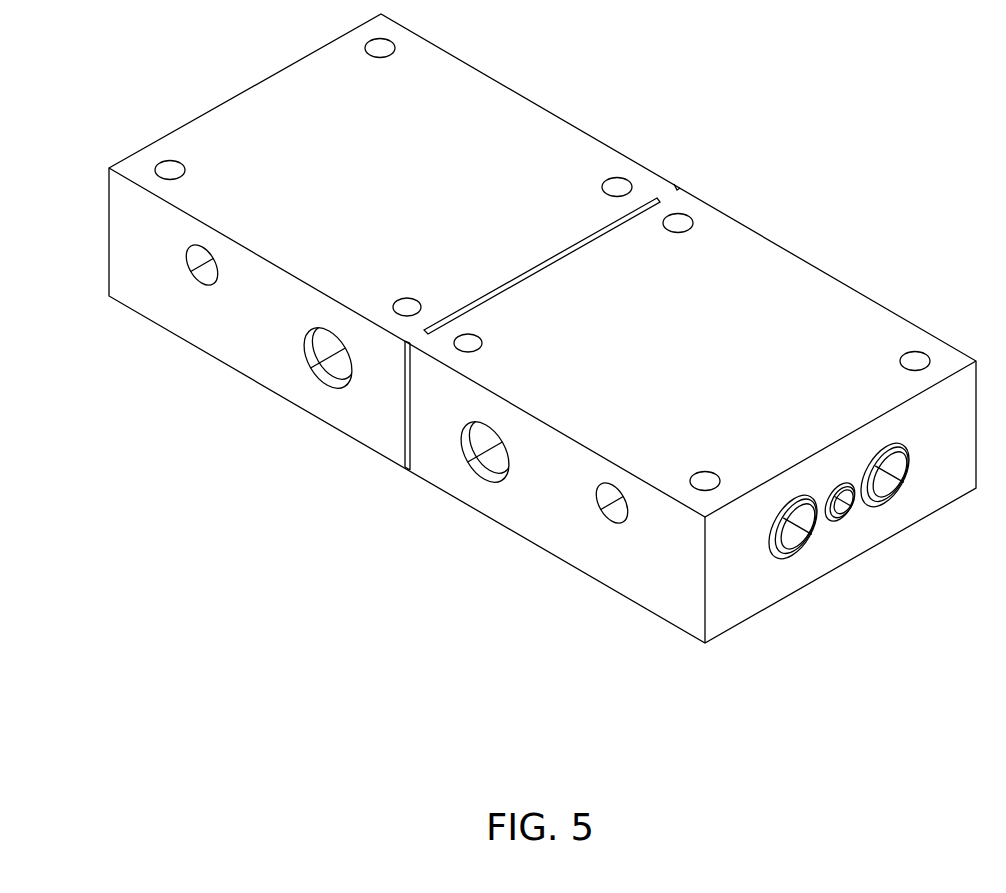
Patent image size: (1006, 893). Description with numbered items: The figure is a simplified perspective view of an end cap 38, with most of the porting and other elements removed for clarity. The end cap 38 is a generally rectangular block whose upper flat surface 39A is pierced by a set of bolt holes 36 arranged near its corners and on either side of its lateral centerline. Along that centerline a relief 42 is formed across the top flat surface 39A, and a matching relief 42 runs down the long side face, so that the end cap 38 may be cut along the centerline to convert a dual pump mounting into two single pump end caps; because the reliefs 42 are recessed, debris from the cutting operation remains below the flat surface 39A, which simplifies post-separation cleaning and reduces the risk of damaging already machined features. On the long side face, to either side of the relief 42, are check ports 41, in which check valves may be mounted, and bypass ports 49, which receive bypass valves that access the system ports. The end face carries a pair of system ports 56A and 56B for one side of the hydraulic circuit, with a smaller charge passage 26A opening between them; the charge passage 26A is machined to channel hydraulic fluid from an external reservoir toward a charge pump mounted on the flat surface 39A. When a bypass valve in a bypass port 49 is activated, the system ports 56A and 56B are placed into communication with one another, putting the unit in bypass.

The end cap 38 is at (109, 229).
The flat surface 39A is at (713, 362).
The bolt holes 36 is at (404, 297).
The reliefs 42 is at (548, 264).
The check ports 41 is at (318, 374).
The bypass ports 49 is at (196, 272).
The system port 56A is at (805, 536).
The charge passage 26A is at (847, 509).
The system port 56B is at (898, 488).